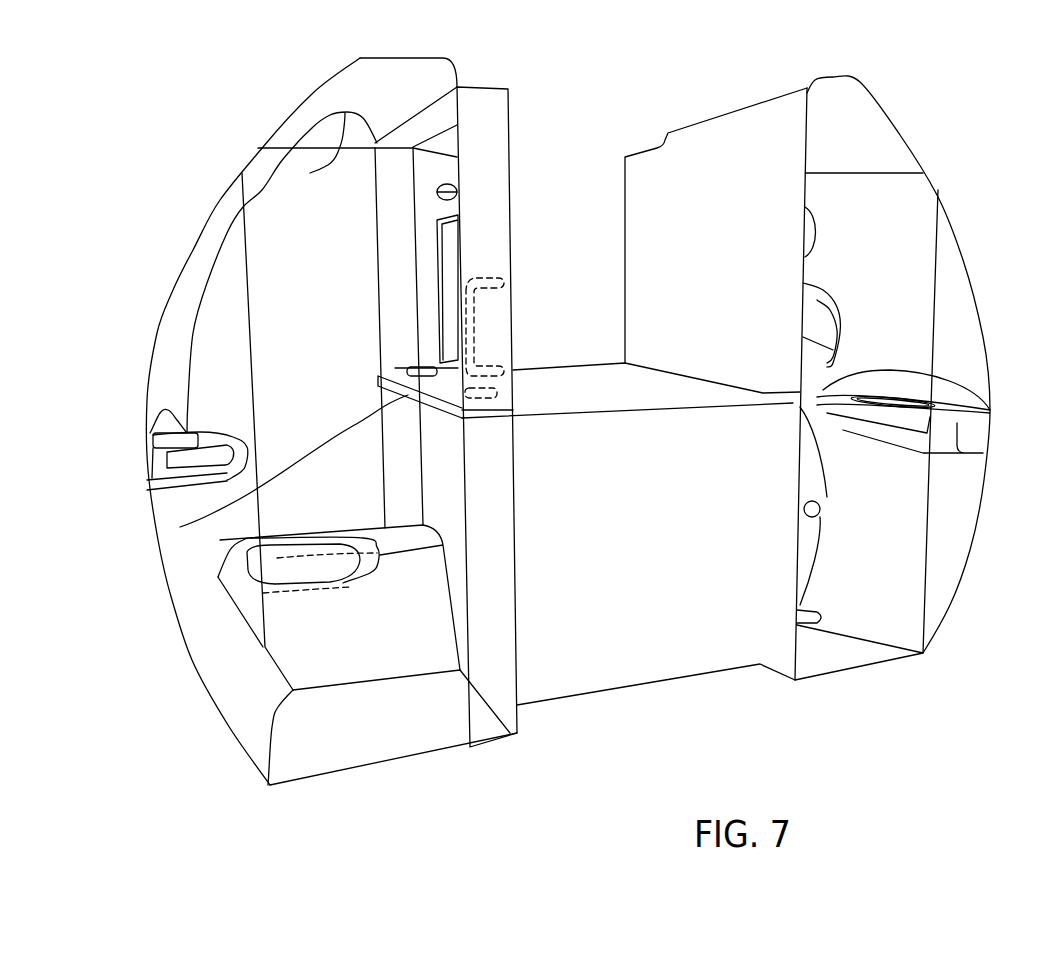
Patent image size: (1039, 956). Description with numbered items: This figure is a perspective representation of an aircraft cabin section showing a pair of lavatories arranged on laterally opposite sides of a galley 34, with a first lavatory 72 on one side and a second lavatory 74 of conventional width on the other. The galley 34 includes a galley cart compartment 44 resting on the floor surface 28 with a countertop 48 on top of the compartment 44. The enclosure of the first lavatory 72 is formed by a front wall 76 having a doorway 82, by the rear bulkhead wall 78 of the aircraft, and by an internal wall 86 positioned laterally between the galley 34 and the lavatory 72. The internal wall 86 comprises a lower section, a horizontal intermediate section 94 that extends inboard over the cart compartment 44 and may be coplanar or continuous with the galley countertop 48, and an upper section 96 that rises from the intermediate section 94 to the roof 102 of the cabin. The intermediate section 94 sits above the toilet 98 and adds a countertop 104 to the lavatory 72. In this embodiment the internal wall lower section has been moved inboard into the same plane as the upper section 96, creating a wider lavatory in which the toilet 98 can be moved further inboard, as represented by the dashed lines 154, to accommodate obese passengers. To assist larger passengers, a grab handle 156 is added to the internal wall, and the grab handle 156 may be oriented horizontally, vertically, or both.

The floor surface 28 is at (415, 750).
The galley 34 is at (598, 140).
The galley cart compartment 44 is at (760, 695).
The countertop 48 is at (555, 370).
The first lavatory 72 is at (280, 193).
The second lavatory 74 is at (908, 222).
The front wall 76 is at (212, 340).
The rear bulkhead wall 78 is at (313, 93).
The doorway 82 is at (230, 237).
The internal wall 86 is at (463, 648).
The intermediate section 94 is at (378, 379).
The upper section 96 is at (427, 337).
The toilet 98 is at (272, 490).
The roof 102 is at (400, 75).
The countertop 104 is at (247, 480).
The dashed lines 154 is at (280, 580).
The grab handle 156 is at (467, 297).